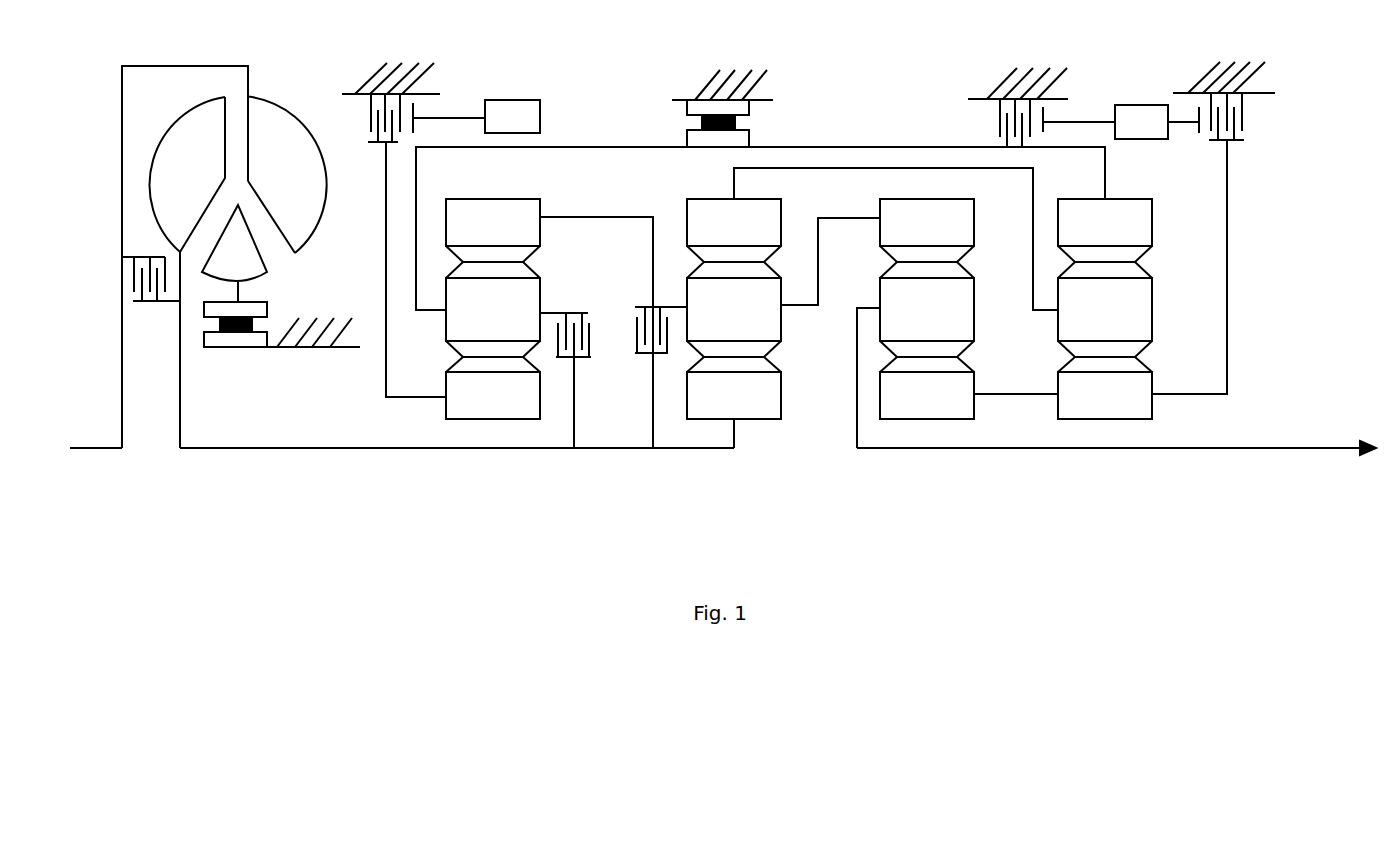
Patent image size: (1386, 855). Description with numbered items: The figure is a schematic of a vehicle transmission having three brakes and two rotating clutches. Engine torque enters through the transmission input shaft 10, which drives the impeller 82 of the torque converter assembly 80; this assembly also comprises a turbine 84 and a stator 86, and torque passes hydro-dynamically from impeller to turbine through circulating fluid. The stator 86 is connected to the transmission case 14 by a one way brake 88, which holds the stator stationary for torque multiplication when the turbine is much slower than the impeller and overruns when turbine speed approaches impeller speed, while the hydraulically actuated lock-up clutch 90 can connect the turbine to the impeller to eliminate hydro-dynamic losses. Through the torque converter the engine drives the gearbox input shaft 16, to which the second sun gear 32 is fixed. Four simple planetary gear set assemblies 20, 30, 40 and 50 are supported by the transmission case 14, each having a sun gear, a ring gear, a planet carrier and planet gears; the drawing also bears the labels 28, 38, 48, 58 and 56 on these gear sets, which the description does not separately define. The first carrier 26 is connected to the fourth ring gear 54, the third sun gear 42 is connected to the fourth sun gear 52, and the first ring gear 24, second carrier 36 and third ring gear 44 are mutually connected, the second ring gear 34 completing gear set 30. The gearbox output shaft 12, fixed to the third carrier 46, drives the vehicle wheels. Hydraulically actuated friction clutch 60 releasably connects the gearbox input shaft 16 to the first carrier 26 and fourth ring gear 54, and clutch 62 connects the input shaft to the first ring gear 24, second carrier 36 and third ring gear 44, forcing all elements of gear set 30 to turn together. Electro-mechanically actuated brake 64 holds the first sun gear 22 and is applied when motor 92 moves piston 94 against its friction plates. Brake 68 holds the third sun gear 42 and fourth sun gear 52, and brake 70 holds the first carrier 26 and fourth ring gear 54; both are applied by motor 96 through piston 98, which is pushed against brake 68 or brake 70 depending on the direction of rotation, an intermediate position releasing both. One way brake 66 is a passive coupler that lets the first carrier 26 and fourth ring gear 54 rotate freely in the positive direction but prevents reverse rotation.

The transmission input shaft 10 is at (76, 447).
The gearbox output shaft 12 is at (1220, 449).
The transmission case 14 is at (362, 82).
The gearbox input shaft 16 is at (612, 449).
The first planetary gear set 20 is at (493, 344).
The first sun gear 22 is at (481, 404).
The first ring gear 24 is at (481, 234).
The first carrier 26 is at (425, 311).
The carrier of first planetary gear set 28 is at (481, 322).
The second planetary gear set 30 is at (734, 344).
The second sun gear 32 is at (734, 395).
The second ring gear 34 is at (734, 222).
The second carrier 36 is at (800, 307).
The carrier of second planetary gear set 38 is at (722, 322).
The third planetary gear set 40 is at (969, 344).
The third sun gear 42 is at (927, 395).
The third ring gear 44 is at (927, 222).
The third carrier 46 is at (870, 307).
The carrier of third planetary gear set 48 is at (927, 309).
The fourth planetary gear set 50 is at (1105, 347).
The fourth sun gear 52 is at (1105, 395).
The fourth ring gear 54 is at (1105, 222).
The connecting member 56 is at (1048, 315).
The carrier of fourth planetary gear set 58 is at (1093, 322).
The clutch 60 is at (592, 345).
The clutch 62 is at (633, 322).
The brake 64 is at (368, 130).
The one way brake 66 is at (687, 132).
The brake 68 is at (1245, 122).
The brake 70 is at (998, 132).
The torque converter assembly 80 is at (231, 278).
The impeller 82 is at (276, 179).
The turbine 84 is at (187, 174).
The stator 86 is at (262, 272).
The one way brake 88 is at (224, 348).
The lock-up clutch 90 is at (153, 302).
The motor 92 is at (500, 128).
The piston 94 is at (448, 117).
The motor 96 is at (1129, 133).
The piston 98 is at (1085, 122).